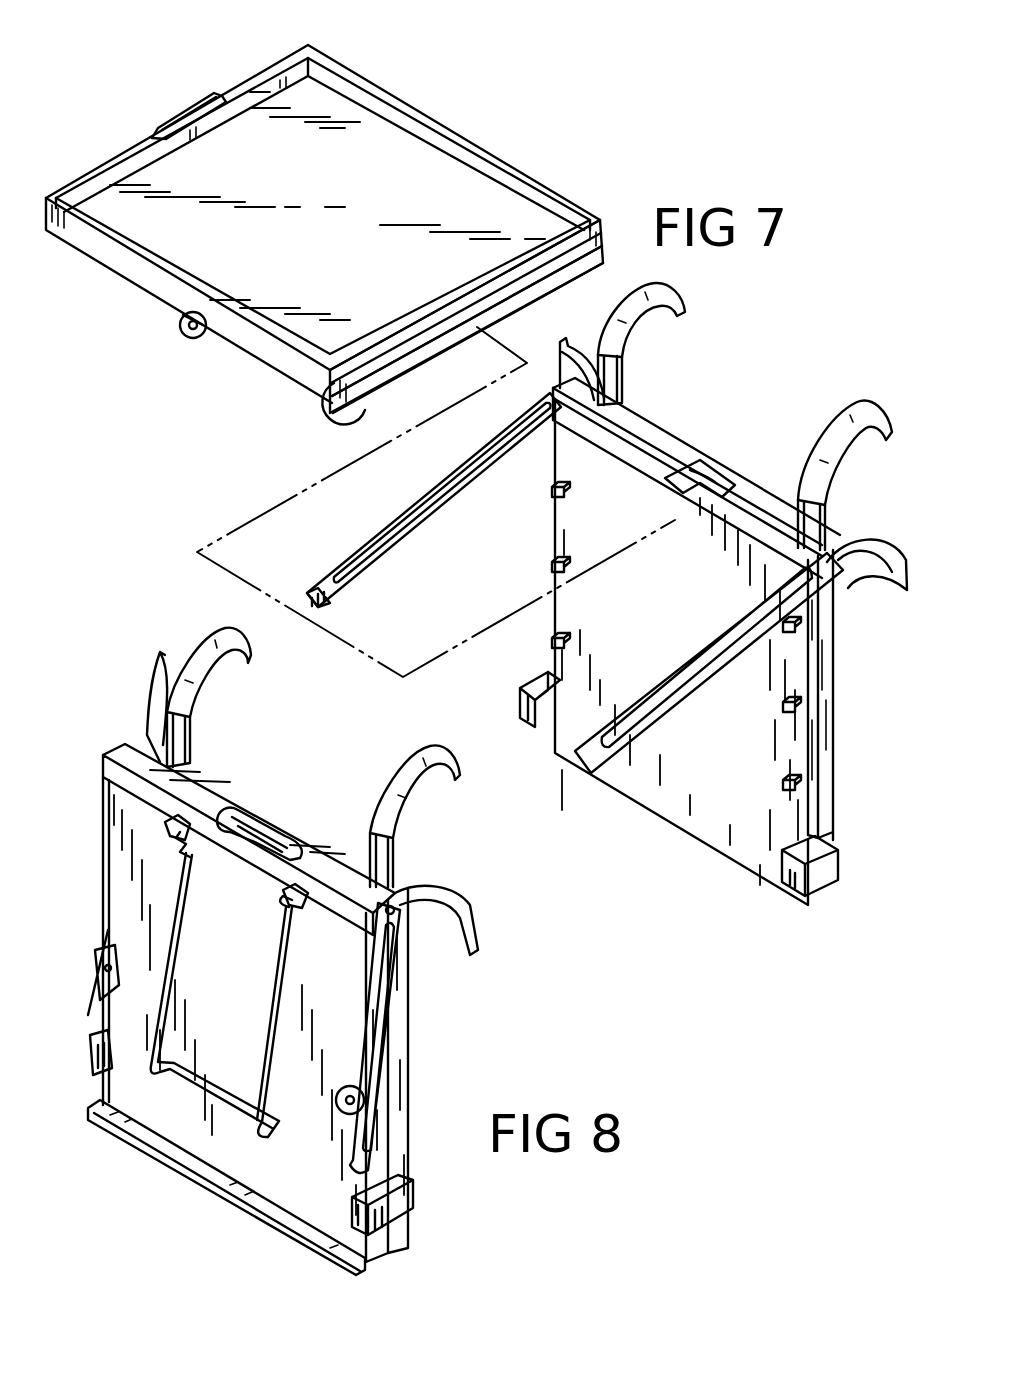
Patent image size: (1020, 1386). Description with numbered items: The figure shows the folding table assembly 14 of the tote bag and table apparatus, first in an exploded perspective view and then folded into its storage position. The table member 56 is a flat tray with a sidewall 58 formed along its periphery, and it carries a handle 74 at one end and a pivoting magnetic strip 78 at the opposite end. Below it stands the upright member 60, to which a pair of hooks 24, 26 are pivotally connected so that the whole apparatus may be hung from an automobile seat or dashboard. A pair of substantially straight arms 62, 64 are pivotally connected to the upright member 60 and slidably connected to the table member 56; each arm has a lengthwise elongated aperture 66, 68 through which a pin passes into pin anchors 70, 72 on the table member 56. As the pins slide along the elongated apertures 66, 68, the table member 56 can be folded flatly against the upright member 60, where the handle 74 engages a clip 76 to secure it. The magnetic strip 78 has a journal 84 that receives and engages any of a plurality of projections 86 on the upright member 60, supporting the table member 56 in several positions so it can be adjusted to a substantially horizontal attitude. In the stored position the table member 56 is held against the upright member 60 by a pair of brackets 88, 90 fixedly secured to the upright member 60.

In FIG. 8, the folding table assembly 14 is at (410, 1243).
In FIG. 7, the hook 24 is at (635, 330).
In FIG. 7, the hook 26 is at (838, 438).
In FIG. 7, the table member 56 is at (324, 206).
In FIG. 7, the sidewall 58 is at (530, 170).
In FIG. 8, the upright member 60 is at (400, 1052).
In FIG. 7, the arm 62 is at (312, 588).
In FIG. 7, the arm 64 is at (590, 765).
In FIG. 7, the elongated aperture 66 is at (455, 485).
In FIG. 7, the elongated aperture 68 is at (692, 685).
In FIG. 8, the pin anchor 70 is at (112, 988).
In FIG. 7, the pin anchor 72 is at (170, 332).
In FIG. 8, the pin anchor 72 is at (345, 1095).
In FIG. 7, the handle 74 is at (205, 92).
In FIG. 8, the handle 74 is at (268, 815).
In FIG. 7, the clip 76 is at (698, 468).
In FIG. 7, the magnetic strip 78 is at (614, 240).
In FIG. 8, the magnetic strip 78 is at (178, 1165).
In FIG. 7, the journal 84 is at (338, 418).
In FIG. 7, the projections 86 is at (575, 495).
In FIG. 7, the bracket 88 is at (528, 725).
In FIG. 7, the bracket 90 is at (830, 872).